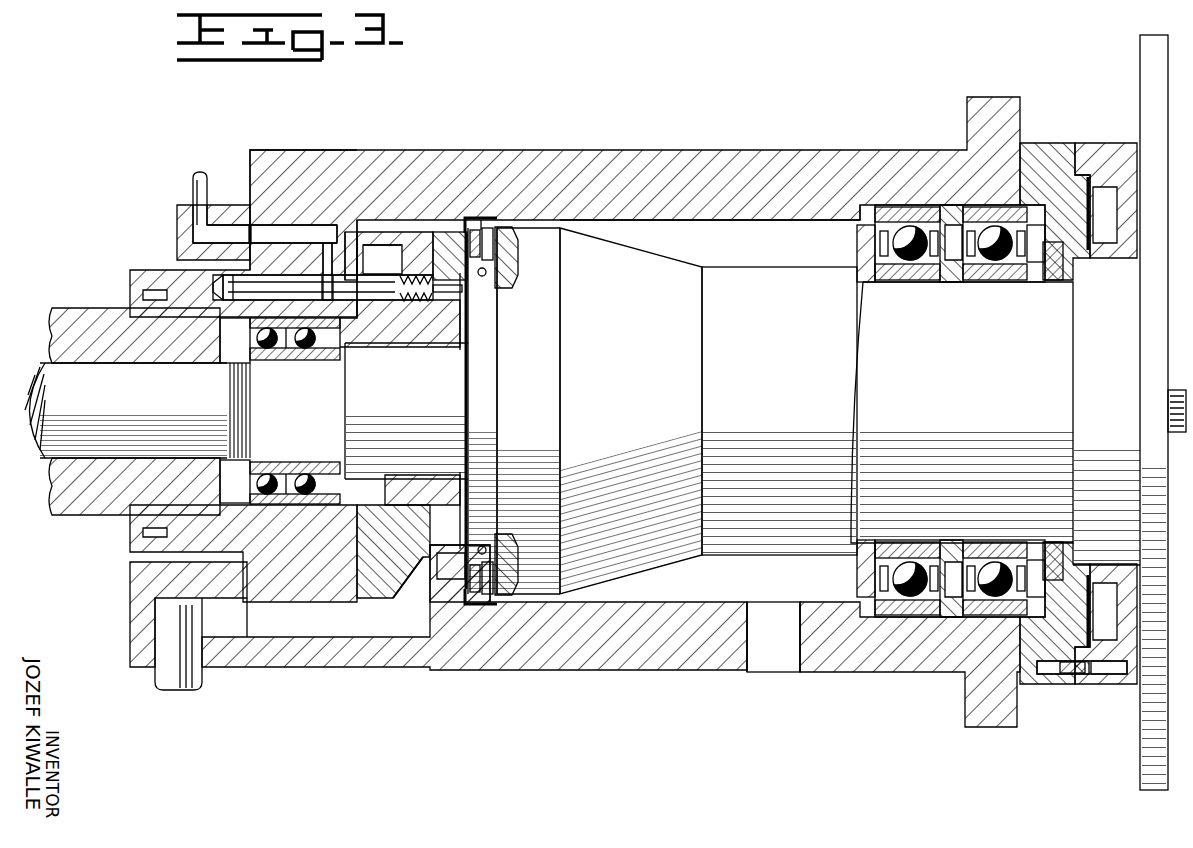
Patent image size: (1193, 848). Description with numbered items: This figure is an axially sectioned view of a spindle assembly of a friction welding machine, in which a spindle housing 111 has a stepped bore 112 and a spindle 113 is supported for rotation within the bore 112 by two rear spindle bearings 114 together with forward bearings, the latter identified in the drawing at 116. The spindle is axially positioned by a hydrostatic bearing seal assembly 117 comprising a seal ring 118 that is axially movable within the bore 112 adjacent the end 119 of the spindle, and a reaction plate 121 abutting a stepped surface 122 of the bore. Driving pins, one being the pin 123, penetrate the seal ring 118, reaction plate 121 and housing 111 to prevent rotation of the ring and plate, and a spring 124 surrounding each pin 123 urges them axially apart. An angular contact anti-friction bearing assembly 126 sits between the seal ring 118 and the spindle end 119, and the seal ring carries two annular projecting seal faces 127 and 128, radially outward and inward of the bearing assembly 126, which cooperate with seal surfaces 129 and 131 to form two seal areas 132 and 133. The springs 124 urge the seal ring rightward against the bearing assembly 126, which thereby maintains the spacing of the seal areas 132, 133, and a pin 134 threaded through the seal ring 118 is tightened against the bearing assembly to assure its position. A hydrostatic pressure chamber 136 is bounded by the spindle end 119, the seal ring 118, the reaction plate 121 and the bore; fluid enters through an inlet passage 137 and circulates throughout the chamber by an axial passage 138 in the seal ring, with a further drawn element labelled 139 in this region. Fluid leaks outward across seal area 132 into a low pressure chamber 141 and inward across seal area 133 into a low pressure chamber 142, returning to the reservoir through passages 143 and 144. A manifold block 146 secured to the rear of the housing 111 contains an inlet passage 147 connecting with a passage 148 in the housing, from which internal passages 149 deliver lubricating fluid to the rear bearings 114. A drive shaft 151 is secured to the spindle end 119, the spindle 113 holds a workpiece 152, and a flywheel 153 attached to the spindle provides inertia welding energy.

The spindle housing 111 is at (806, 152).
The stepped bore 112 is at (768, 228).
The spindle 113 is at (967, 363).
The rear spindle bearings 114 is at (324, 376).
The rear bearings 116 is at (997, 290).
The hydrostatic bearing seal assembly 117 is at (477, 364).
The seal ring 118 is at (438, 232).
The end of the spindle 119 is at (458, 383).
The reaction plate 121 is at (388, 240).
The stepped surface 122 is at (338, 238).
The driving pin 123 is at (149, 411).
The spring 124 is at (411, 264).
The angular contact anti-friction bearing assembly 126 is at (516, 288).
The seal face 127 is at (509, 262).
The seal face 128 is at (472, 312).
The seal surface 129 is at (470, 585).
The seal surface 131 is at (462, 350).
The seal area 132 is at (498, 212).
The seal area 133 is at (478, 328).
The pin 134 is at (500, 203).
The hydrostatic pressure chamber 136 is at (413, 588).
The inlet passage 137 is at (355, 628).
The axial passage 138 is at (444, 532).
The block 139 is at (423, 555).
The low pressure chamber 141 is at (818, 218).
The low pressure chamber 142 is at (343, 510).
The passage 143 is at (760, 657).
The passage 144 is at (233, 512).
The manifold block 146 is at (192, 200).
The inlet passage 147 is at (193, 229).
The passage 148 is at (314, 210).
The internal passages 149 is at (323, 262).
The drive shaft 151 is at (114, 404).
The workpiece 152 is at (1167, 407).
The flywheel 153 is at (1140, 320).